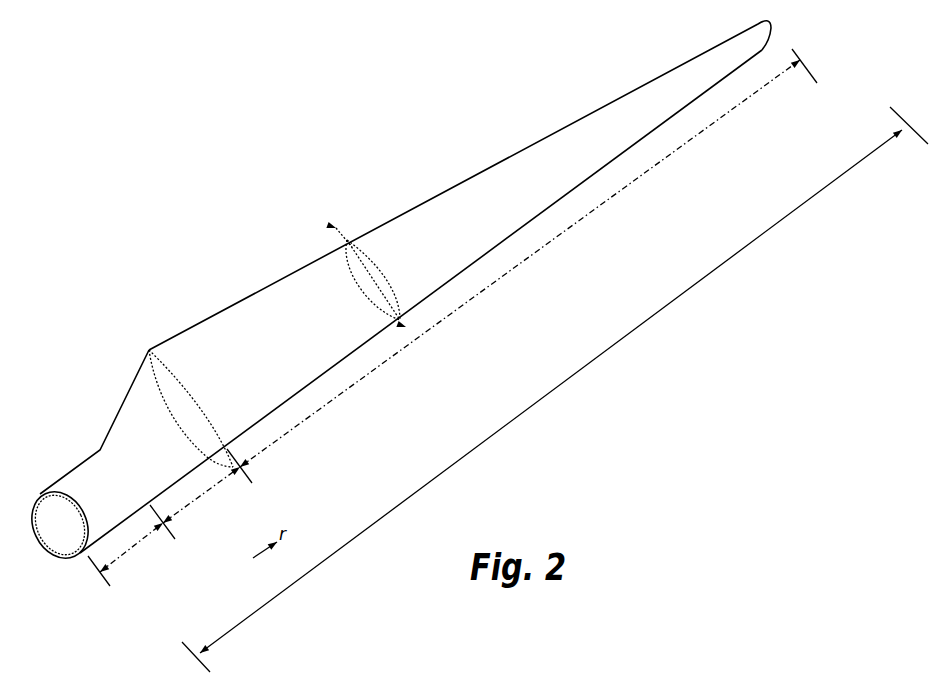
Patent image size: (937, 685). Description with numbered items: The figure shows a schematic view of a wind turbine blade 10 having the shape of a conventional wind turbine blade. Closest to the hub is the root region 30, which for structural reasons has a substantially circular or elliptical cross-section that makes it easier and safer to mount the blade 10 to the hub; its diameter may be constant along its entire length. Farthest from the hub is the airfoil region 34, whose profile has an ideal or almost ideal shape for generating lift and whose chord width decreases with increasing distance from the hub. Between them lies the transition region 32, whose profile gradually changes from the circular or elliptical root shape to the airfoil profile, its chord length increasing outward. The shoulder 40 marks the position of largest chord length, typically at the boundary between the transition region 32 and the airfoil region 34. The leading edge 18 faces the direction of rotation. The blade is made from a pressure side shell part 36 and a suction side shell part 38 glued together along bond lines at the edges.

The wind turbine blade 10 is at (270, 189).
The leading edge 18 is at (548, 213).
The root region 30 is at (132, 548).
The transition region 32 is at (238, 470).
The airfoil region 34 is at (467, 303).
The pressure side shell part 36 is at (58, 490).
The suction side shell part 38 is at (27, 490).
The shoulder 40 is at (147, 345).